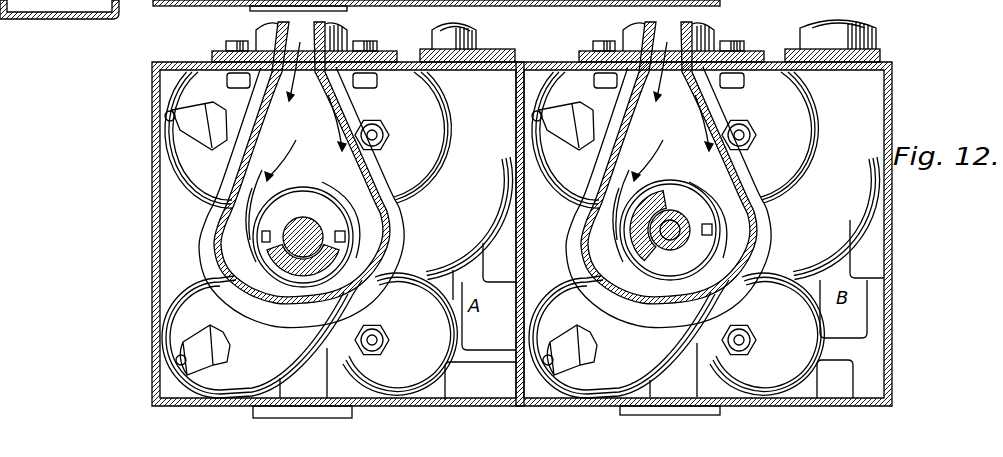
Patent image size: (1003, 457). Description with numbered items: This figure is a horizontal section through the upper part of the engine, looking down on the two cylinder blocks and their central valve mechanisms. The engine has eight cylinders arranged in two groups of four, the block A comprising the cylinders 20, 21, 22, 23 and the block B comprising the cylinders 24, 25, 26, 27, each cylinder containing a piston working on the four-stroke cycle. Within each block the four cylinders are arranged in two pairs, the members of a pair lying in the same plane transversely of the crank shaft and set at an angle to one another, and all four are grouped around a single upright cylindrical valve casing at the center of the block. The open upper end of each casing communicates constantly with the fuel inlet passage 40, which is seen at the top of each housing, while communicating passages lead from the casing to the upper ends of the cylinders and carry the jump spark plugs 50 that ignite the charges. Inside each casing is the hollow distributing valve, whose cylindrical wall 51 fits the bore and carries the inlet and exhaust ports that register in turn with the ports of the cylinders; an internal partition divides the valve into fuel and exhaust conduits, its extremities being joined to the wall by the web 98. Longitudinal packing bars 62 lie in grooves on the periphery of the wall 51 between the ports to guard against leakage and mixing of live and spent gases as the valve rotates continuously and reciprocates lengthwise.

The cylinder 20 is at (162, 4).
The cylinder 21 is at (212, 203).
The cylinder 22 is at (436, 375).
The cylinder 23 is at (436, 184).
The cylinder 24 is at (538, 2).
The cylinder 25 is at (562, 190).
The cylinder 26 is at (809, 372).
The cylinder 27 is at (806, 182).
The fuel inlet passage 40 is at (539, 174).
The jump spark plug 50 is at (768, 325).
The cylindrical wall 51 is at (306, 205).
The longitudinal packing bar 62 is at (262, 215).
The web 98 is at (282, 214).